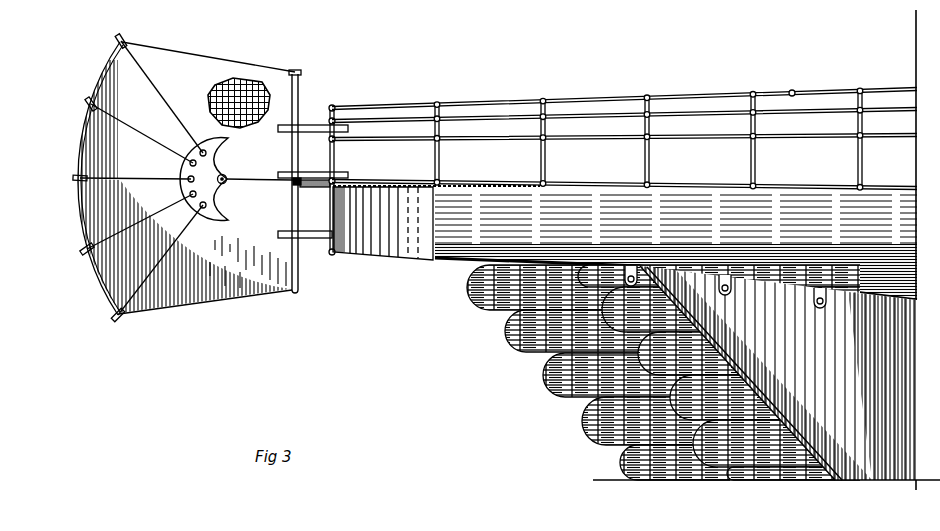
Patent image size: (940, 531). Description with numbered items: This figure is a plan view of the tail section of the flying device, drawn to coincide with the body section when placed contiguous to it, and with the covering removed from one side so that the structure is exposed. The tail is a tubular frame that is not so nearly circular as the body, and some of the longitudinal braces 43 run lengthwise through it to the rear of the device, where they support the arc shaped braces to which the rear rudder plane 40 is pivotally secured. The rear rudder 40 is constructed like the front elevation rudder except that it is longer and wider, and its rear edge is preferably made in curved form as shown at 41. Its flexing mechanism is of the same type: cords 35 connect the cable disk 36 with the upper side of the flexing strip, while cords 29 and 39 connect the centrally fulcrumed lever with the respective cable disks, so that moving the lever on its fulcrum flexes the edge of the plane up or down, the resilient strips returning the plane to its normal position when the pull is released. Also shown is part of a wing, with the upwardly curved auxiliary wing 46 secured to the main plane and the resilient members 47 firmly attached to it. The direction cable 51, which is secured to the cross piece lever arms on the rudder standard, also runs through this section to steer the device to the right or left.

The cord 29 is at (247, 177).
The cords 35 is at (176, 119).
The cable disk 36 is at (211, 180).
The cord 39 is at (297, 180).
The rear rudder plane 40 is at (220, 183).
The curved rear edge 41 is at (80, 205).
The longitudinal braces 43 is at (810, 110).
The auxiliary wing 46 is at (851, 362).
The resilient members 47 is at (542, 373).
The direction cable 51 is at (405, 170).